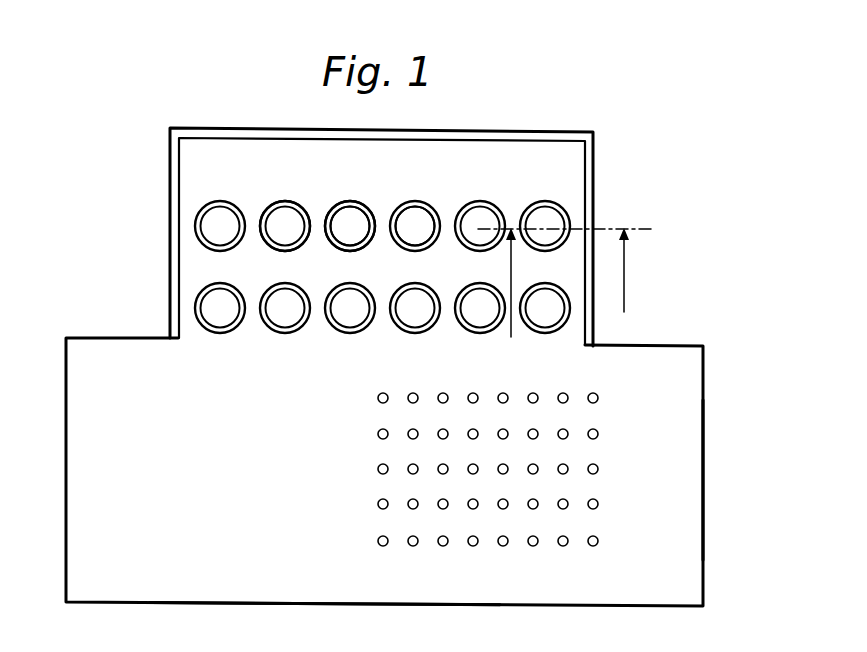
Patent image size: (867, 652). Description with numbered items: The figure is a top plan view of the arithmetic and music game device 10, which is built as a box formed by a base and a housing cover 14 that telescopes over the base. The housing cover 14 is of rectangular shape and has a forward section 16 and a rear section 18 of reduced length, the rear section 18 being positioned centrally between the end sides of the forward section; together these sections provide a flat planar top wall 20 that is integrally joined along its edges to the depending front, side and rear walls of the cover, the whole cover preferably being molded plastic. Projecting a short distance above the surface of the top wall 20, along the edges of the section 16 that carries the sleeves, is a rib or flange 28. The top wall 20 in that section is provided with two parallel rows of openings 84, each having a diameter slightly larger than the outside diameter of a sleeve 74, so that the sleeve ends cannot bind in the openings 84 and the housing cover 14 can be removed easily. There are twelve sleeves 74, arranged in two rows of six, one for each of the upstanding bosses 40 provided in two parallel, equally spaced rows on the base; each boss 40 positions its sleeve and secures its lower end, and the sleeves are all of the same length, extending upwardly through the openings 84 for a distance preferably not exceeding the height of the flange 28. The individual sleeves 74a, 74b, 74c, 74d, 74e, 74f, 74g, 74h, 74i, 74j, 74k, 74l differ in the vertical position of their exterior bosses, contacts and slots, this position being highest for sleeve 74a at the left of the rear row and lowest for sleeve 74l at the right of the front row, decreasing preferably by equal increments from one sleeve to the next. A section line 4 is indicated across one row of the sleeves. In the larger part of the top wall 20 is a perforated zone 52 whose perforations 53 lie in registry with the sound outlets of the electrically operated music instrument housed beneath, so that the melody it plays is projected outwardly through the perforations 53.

The arithmetic and music game device 10 is at (134, 274).
The housing cover 14 is at (712, 529).
The forward section 16 is at (558, 177).
The rear section 18 is at (692, 468).
The top wall 20 is at (293, 580).
The rib or flange 28 is at (172, 181).
The upstanding bosses 40 is at (408, 221).
The section line 4 is at (524, 354).
The perforated zone 52 is at (577, 458).
The perforations 53 is at (563, 546).
The sleeves 74 is at (480, 204).
The sleeve 74a is at (206, 245).
The sleeve 74b is at (271, 245).
The sleeve 74c is at (336, 245).
The sleeve 74d is at (401, 245).
The sleeve 74e is at (466, 245).
The sleeve 74f is at (531, 245).
The sleeve 74g is at (212, 325).
The sleeve 74h is at (270, 322).
The sleeve 74i is at (335, 323).
The sleeve 74j is at (400, 323).
The sleeve 74k is at (470, 328).
The sleeve 74l is at (535, 332).
The openings 84 is at (338, 212).